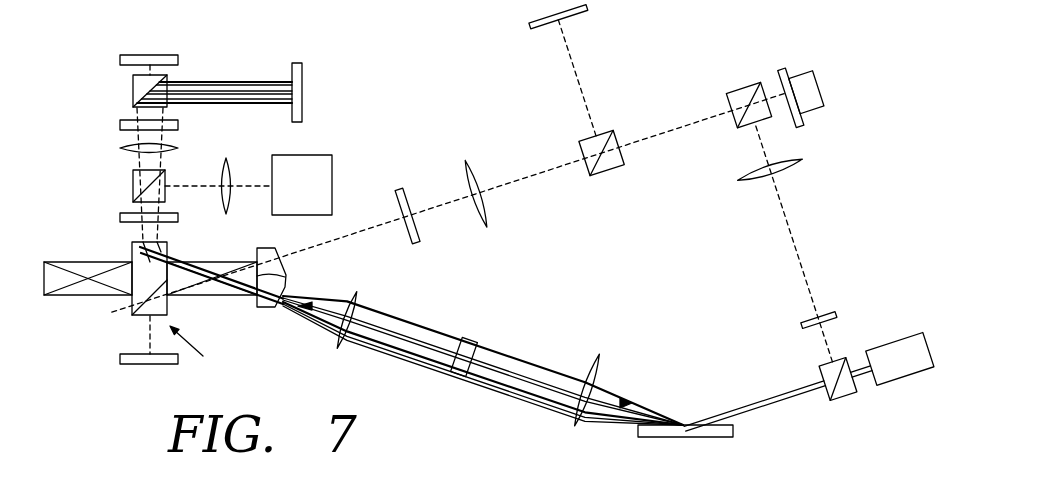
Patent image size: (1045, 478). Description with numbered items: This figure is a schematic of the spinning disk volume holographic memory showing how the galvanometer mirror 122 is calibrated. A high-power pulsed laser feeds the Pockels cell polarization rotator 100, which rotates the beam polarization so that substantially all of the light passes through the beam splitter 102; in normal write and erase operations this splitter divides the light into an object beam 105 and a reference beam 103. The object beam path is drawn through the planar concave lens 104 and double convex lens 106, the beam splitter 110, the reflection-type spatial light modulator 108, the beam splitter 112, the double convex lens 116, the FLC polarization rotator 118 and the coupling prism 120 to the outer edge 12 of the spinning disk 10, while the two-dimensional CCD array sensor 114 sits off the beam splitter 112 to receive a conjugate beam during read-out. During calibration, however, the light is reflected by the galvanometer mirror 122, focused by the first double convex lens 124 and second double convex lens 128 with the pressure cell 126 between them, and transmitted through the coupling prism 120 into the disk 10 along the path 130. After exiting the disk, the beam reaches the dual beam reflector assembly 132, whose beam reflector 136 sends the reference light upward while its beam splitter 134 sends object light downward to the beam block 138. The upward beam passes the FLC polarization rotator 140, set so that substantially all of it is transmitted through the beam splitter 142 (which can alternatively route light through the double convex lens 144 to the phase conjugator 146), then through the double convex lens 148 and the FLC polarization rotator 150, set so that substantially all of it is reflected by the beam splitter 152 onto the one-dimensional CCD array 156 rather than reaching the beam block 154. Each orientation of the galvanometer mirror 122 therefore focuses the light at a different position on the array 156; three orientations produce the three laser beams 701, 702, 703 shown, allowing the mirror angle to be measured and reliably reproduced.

The spinning disk 10 is at (76, 260).
The outer edge of the disk 12 is at (287, 278).
The Pockels cell polarization rotator 100 is at (902, 341).
The beam splitter 102 is at (848, 401).
The reference beam 103 is at (758, 398).
The planar concave lens 104 is at (804, 323).
The object beam 105 is at (527, 181).
The double convex lens 106 is at (738, 181).
The reflection-type spatial light modulator 108 is at (784, 70).
The beam splitter 110 is at (747, 91).
The beam splitter 112 is at (607, 177).
The two-dimensional CCD array sensor 114 is at (530, 27).
The double convex lens 116 is at (469, 166).
The ferroelectric liquid crystal polarization rotator 118 is at (401, 189).
The coupling prism 120 is at (266, 308).
The galvanometer mirror 122 is at (682, 438).
The first double convex lens 124 is at (594, 366).
The pressure cell 126 is at (469, 340).
The second double convex lens 128 is at (338, 349).
The beam path 130 is at (216, 296).
The dual beam reflector assembly 132 is at (208, 352).
The beam splitter 134 is at (132, 304).
The beam reflector 136 is at (168, 250).
The beam block 138 is at (120, 358).
The FLC polarization rotator 140 is at (120, 217).
The beam splitter 142 is at (133, 190).
The double convex lens 144 is at (231, 214).
The phase conjugator 146 is at (310, 155).
The double convex lens 148 is at (121, 147).
The FLC polarization rotator 150 is at (120, 124).
The beam splitter 152 is at (132, 92).
The beam block 154 is at (119, 57).
The one-dimensional CCD array 156 is at (302, 92).
The laser beam 701 is at (236, 103).
The laser beam 702 is at (208, 90).
The laser beam 703 is at (257, 81).